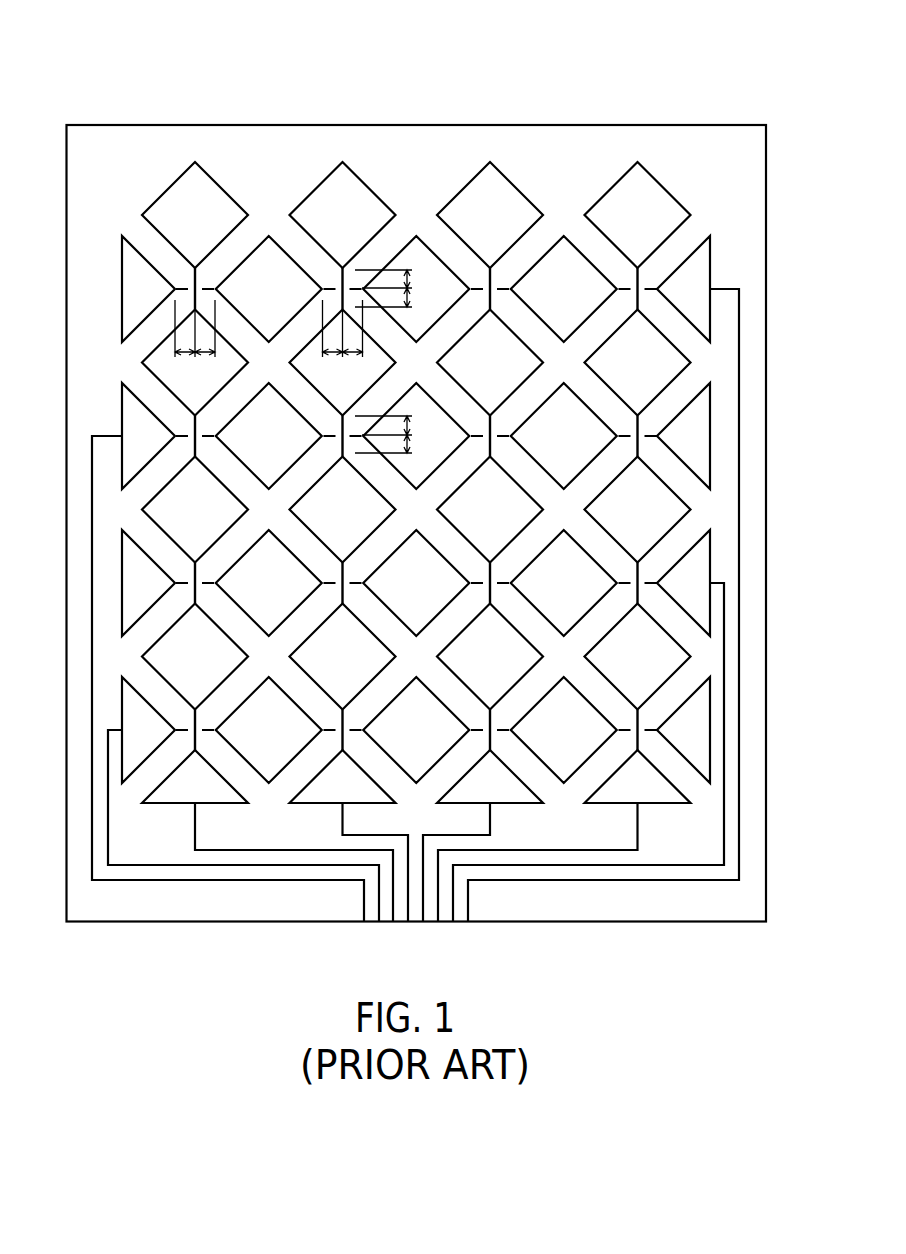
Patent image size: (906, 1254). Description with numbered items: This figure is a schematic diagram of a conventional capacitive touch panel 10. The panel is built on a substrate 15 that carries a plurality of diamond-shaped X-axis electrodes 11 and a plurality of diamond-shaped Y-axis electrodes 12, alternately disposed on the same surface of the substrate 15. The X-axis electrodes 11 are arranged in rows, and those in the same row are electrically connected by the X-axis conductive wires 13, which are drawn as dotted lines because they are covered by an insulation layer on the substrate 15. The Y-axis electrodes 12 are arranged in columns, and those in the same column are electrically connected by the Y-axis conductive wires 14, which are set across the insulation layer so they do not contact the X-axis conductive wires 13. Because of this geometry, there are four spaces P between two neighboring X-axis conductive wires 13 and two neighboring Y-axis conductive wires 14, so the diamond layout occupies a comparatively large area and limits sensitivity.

The touch panel 10 is at (440, 32).
The X-axis electrodes 11 is at (245, 319).
The Y-axis electrodes 12 is at (171, 189).
The X-axis conductive wires 13 is at (333, 288).
The Y-axis conductive wires 14 is at (192, 273).
The substrate 15 is at (733, 147).